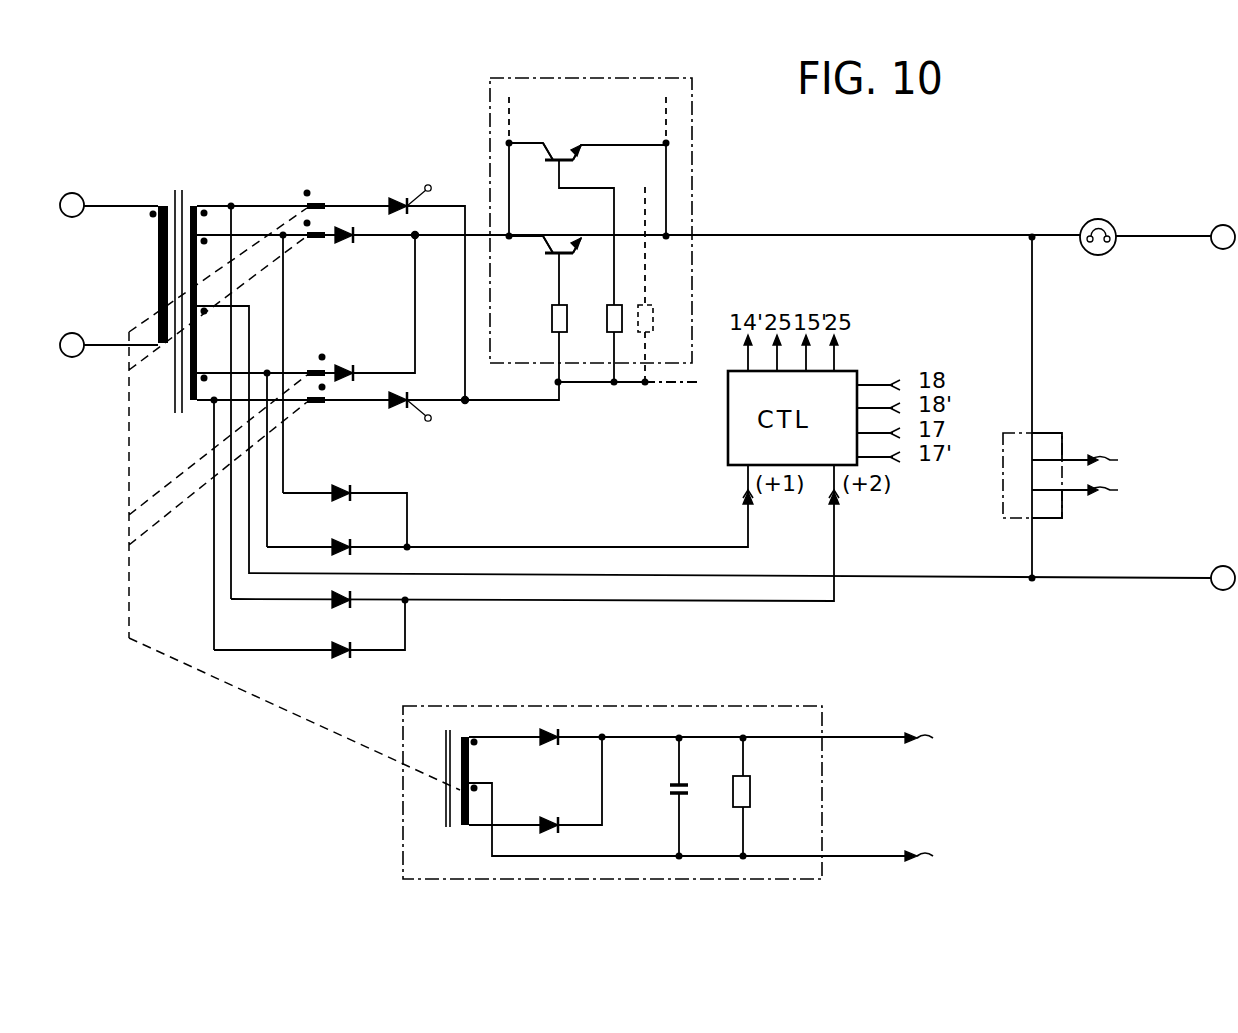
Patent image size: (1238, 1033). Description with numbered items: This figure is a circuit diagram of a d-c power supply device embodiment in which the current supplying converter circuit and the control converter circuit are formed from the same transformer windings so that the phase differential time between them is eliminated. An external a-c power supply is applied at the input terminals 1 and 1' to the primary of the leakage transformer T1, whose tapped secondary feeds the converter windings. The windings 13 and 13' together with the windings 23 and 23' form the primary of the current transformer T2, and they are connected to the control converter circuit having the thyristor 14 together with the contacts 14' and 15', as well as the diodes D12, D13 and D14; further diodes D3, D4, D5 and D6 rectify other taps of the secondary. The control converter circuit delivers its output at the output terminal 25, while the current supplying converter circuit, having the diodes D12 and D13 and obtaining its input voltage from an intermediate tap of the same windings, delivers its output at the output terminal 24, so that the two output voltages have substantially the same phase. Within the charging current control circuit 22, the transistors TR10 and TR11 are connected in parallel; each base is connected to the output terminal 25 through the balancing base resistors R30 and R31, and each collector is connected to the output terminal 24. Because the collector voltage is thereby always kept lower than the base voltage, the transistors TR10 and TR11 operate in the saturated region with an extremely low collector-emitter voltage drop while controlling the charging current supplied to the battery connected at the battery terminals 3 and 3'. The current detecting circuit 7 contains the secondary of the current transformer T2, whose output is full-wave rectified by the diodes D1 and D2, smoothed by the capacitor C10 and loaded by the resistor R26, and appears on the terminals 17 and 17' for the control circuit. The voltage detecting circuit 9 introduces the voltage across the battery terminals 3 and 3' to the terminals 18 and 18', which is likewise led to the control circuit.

The input terminal 1 is at (72, 183).
The input terminal 1' is at (73, 323).
The battery terminal 3 is at (1157, 258).
The battery terminal 3' is at (1224, 550).
The current detecting circuit 7 is at (403, 846).
The voltage detecting circuit 9 is at (1050, 432).
The primary winding 13 is at (320, 180).
The primary winding 13' is at (327, 423).
The thyristor 14 is at (391, 183).
The switch contact 14' is at (427, 173).
The switch contact 15' is at (437, 435).
The terminal 17 is at (941, 739).
The terminal 17' is at (944, 857).
The terminal 18 is at (1119, 461).
The terminal 18' is at (1122, 491).
The charging current control circuit 22 is at (692, 148).
The winding 23 is at (318, 262).
The winding 23' is at (317, 344).
The output terminal 24 is at (418, 240).
The output terminal 25 is at (466, 403).
The leakage transformer T1 is at (173, 411).
The current transformer T2 is at (448, 829).
The transistor TR10 is at (560, 246).
The transistor TR11 is at (557, 152).
The balancing base resistor R30 is at (552, 316).
The balancing base resistor R31 is at (608, 312).
The resistor R26 is at (750, 782).
The capacitor C10 is at (669, 788).
The diode D1 is at (547, 744).
The diode D2 is at (550, 816).
The diode D3 is at (342, 485).
The diode D4 is at (345, 538).
The diode D5 is at (343, 607).
The diode D6 is at (343, 657).
The diode D12 is at (346, 244).
The diode D13 is at (346, 365).
The diode D14 is at (397, 409).